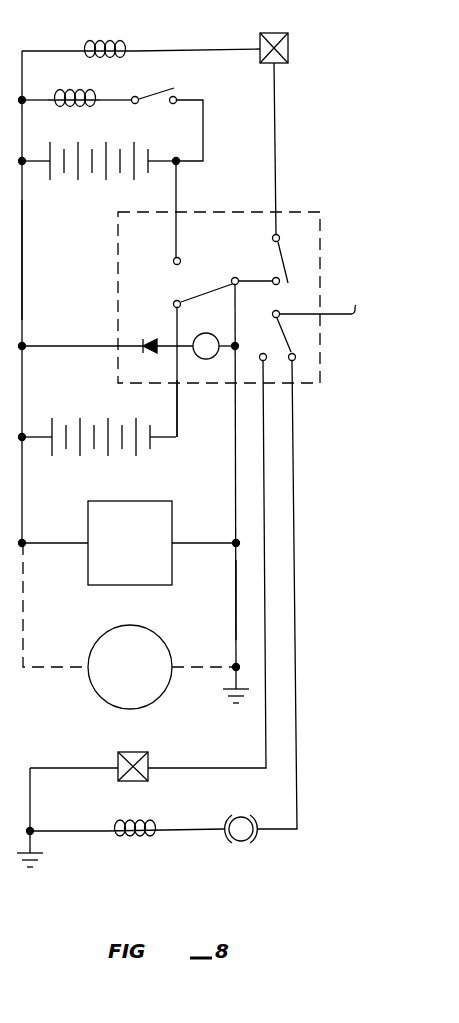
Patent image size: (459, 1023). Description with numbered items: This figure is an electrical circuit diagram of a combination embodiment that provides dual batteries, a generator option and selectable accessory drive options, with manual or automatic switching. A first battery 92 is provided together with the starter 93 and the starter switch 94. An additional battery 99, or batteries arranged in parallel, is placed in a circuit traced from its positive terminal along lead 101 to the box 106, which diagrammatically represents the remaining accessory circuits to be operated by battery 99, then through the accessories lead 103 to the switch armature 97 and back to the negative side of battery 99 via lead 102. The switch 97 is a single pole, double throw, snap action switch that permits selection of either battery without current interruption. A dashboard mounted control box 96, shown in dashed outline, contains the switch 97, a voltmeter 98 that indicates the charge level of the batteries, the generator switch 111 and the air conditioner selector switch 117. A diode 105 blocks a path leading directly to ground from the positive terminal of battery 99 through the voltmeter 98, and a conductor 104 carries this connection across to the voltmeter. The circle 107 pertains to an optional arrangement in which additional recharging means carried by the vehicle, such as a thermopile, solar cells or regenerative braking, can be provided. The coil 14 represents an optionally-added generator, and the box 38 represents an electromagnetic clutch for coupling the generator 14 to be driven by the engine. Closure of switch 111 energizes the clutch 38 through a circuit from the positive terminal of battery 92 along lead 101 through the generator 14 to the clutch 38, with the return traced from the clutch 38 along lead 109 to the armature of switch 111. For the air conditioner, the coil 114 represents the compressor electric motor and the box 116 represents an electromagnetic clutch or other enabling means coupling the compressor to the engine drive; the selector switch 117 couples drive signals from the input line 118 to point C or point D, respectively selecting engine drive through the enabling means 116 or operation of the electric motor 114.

The generator 14 is at (106, 40).
The electromagnetic clutch 38 is at (261, 36).
The starter 93 is at (76, 97).
The starter switch 94 is at (157, 90).
The lead 109 is at (277, 108).
The dashboard mounted control box 96 is at (293, 207).
The first battery 92 is at (74, 181).
The lead 101 is at (24, 265).
The single pole, double throw, snap action switch 97 is at (202, 289).
The switch 111 is at (285, 262).
The line 118 is at (333, 311).
The selector switch 117 is at (289, 341).
The conductor line 104 is at (70, 345).
The diode 105 is at (150, 352).
The voltmeter 98 is at (207, 360).
The additional battery 99 is at (78, 452).
The lead 102 is at (174, 440).
The box 106 is at (148, 557).
The accessories lead 103 is at (236, 604).
The additional recharging means 107 is at (149, 681).
The enabling means 116 is at (149, 762).
The air conditioner compressor electric motor 114 is at (150, 833).